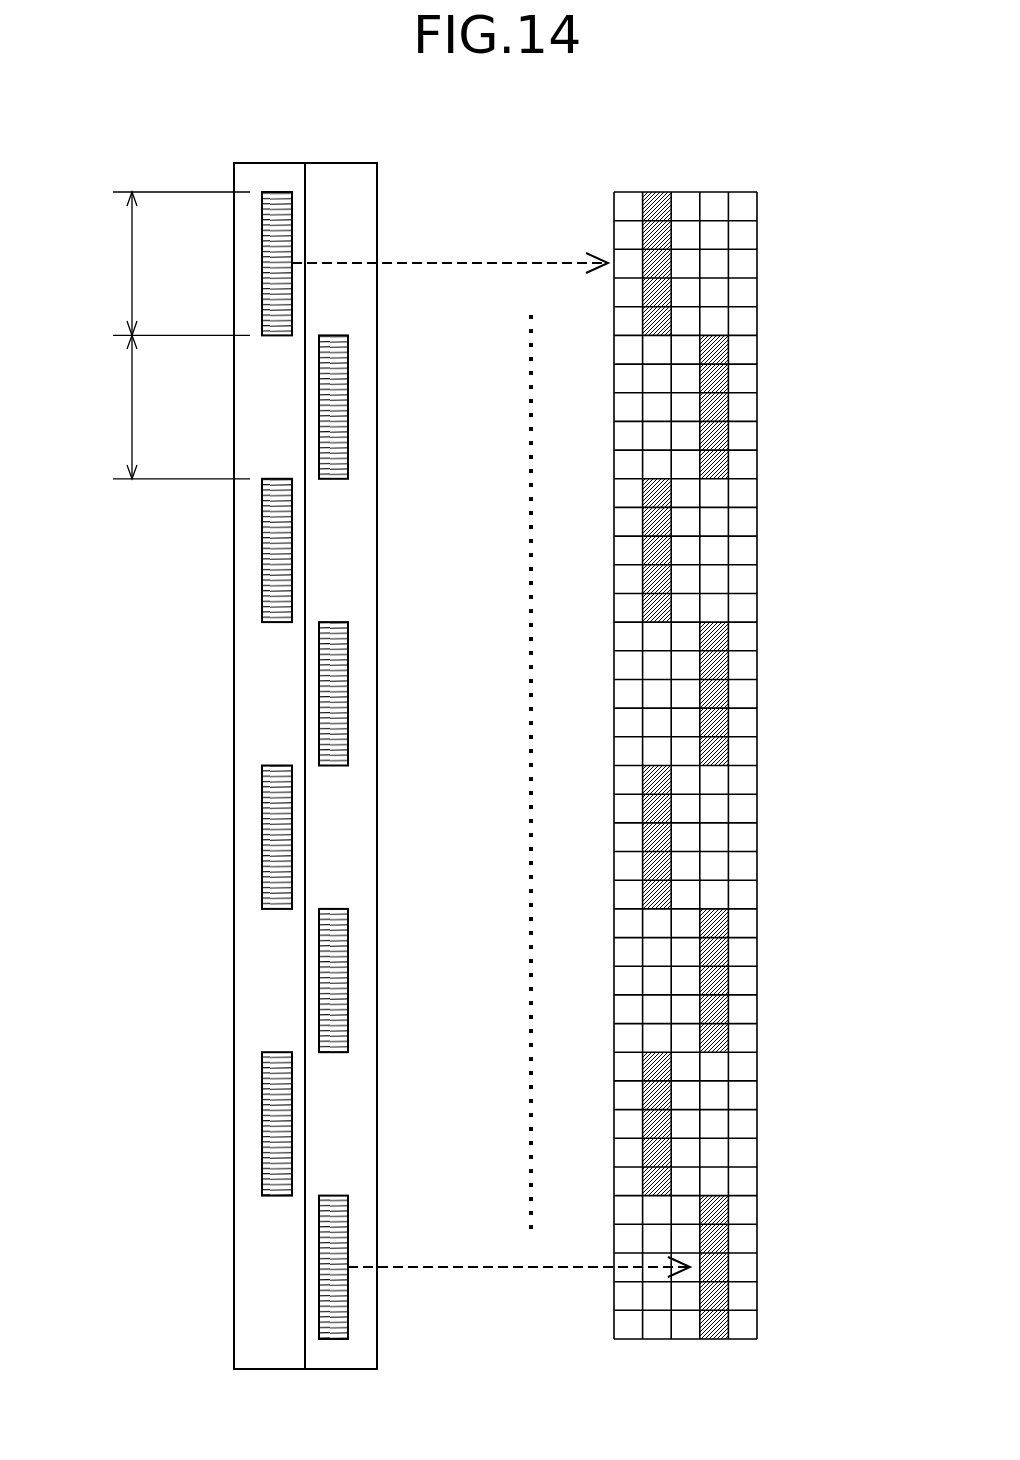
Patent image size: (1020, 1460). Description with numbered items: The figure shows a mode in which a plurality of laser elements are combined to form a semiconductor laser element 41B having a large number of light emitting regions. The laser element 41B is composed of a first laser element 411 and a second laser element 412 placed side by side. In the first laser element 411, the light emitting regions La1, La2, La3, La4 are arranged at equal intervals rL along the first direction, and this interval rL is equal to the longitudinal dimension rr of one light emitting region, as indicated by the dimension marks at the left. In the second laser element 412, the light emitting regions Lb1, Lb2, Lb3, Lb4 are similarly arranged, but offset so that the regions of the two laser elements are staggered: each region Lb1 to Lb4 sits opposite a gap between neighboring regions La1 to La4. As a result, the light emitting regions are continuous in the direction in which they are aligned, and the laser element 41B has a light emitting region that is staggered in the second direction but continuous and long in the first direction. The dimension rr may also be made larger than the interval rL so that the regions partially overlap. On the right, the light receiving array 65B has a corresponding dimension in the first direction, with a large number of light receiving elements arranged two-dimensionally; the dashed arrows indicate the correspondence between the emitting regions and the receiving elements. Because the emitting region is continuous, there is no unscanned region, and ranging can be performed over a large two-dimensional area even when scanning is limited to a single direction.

The semiconductor laser element 41B is at (305, 732).
The first laser element 411 is at (250, 163).
The second laser element 412 is at (360, 163).
The light receiving array 65B is at (743, 192).
The light emitting region La1 is at (272, 247).
The light emitting region La2 is at (272, 532).
The light emitting region La3 is at (272, 818).
The light emitting region La4 is at (272, 1105).
The light emitting region Lb1 is at (338, 392).
The light emitting region Lb2 is at (338, 678).
The light emitting region Lb3 is at (338, 965).
The light emitting region Lb4 is at (338, 1252).
The longitudinal dimension of light emitting region rr is at (177, 263).
The interval between light emitting regions rL is at (176, 406).